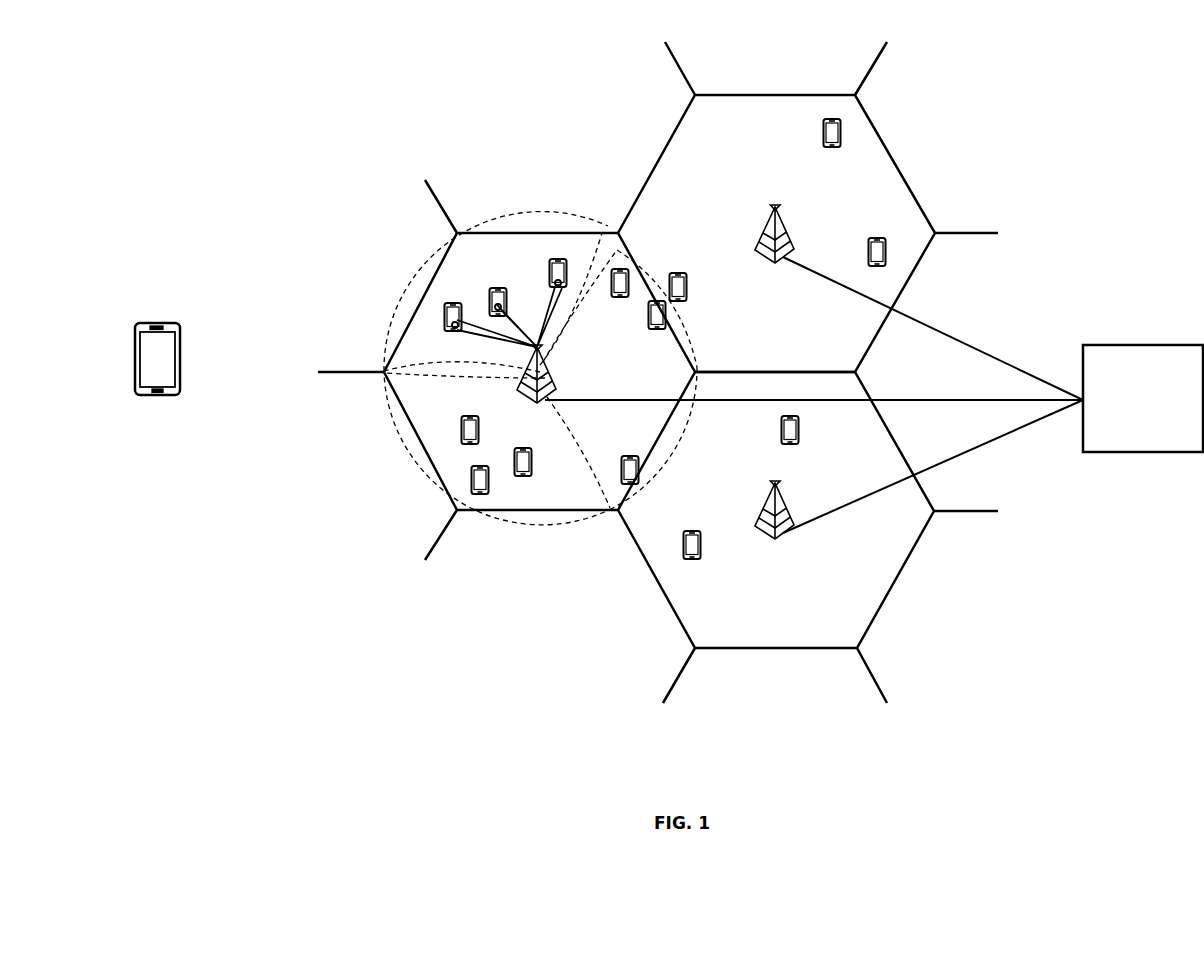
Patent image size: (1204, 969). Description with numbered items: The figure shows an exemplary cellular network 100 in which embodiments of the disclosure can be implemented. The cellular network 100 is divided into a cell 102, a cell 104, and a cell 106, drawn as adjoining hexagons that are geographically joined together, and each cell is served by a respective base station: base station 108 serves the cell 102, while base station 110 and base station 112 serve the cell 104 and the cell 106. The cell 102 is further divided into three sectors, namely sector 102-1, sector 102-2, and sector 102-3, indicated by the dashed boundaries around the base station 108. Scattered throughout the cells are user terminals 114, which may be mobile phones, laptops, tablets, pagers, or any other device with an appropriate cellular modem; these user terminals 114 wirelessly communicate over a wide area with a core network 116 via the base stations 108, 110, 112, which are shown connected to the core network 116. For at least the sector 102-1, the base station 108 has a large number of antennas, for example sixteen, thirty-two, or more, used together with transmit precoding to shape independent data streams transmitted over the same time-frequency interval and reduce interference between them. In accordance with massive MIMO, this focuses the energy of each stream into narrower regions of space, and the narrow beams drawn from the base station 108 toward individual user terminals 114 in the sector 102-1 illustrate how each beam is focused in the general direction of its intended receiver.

The cellular network 100 is at (247, 730).
The cell 102 is at (413, 433).
The sector 102-1 is at (515, 212).
The sector 102-2 is at (690, 328).
The sector 102-3 is at (530, 530).
The cell 104 is at (898, 575).
The cell 106 is at (892, 157).
The base station 108 is at (548, 368).
The base station 110 is at (787, 506).
The base station 112 is at (787, 231).
The user terminal 114 is at (157, 323).
The core network 116 is at (1143, 398).